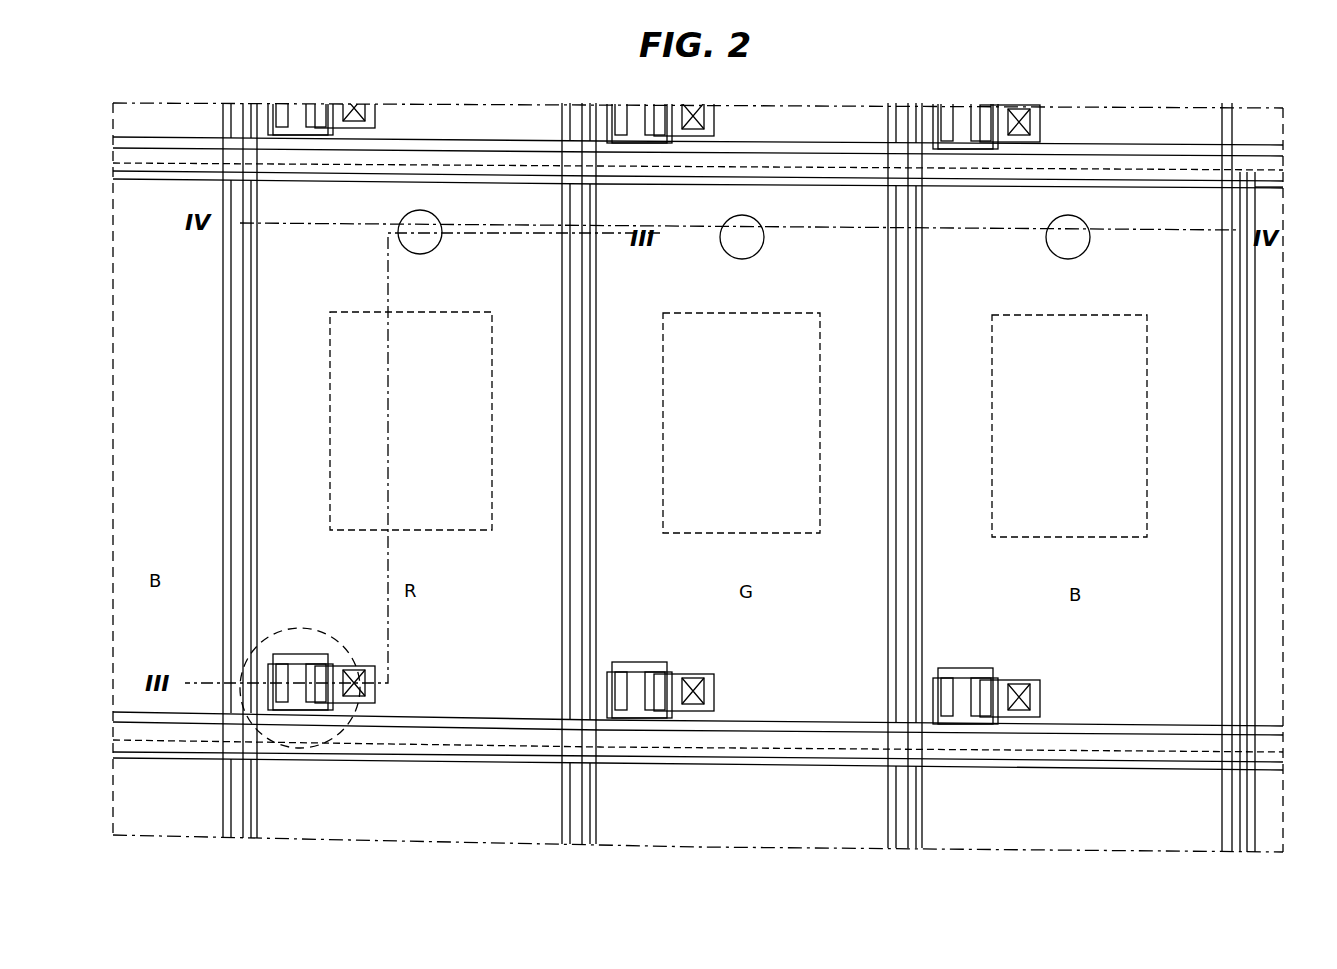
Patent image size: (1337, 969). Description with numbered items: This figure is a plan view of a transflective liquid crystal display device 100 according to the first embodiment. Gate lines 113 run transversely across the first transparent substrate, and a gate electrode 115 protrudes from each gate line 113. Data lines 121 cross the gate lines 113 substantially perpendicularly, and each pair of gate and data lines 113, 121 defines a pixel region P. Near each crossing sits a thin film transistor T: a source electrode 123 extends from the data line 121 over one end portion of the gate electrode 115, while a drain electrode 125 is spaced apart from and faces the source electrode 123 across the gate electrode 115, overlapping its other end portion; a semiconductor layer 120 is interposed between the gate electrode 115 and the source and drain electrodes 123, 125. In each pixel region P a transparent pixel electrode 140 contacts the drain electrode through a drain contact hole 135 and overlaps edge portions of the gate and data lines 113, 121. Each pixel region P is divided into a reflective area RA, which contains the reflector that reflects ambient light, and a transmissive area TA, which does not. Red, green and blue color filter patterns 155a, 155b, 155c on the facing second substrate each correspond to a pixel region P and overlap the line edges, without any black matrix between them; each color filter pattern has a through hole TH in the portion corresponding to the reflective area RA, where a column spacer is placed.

The substrate 100 is at (712, 850).
The gate line 113 is at (467, 765).
The gate electrode 115 is at (650, 443).
The semiconductor layer 120 is at (298, 730).
The data line 121 is at (225, 490).
The source electrode 123 is at (296, 650).
The drain electrode 125 is at (308, 647).
The drain contact hole 135 is at (346, 663).
The pixel electrode 140 is at (250, 432).
The color filter pattern 155a is at (245, 375).
The color filter pattern 155b is at (585, 608).
The color filter pattern 155c is at (245, 289).
The through hole TH is at (437, 240).
The transmissive area TA is at (478, 422).
The reflective area RA is at (545, 513).
The pixel region P is at (258, 338).
The thin film transistor T is at (316, 762).